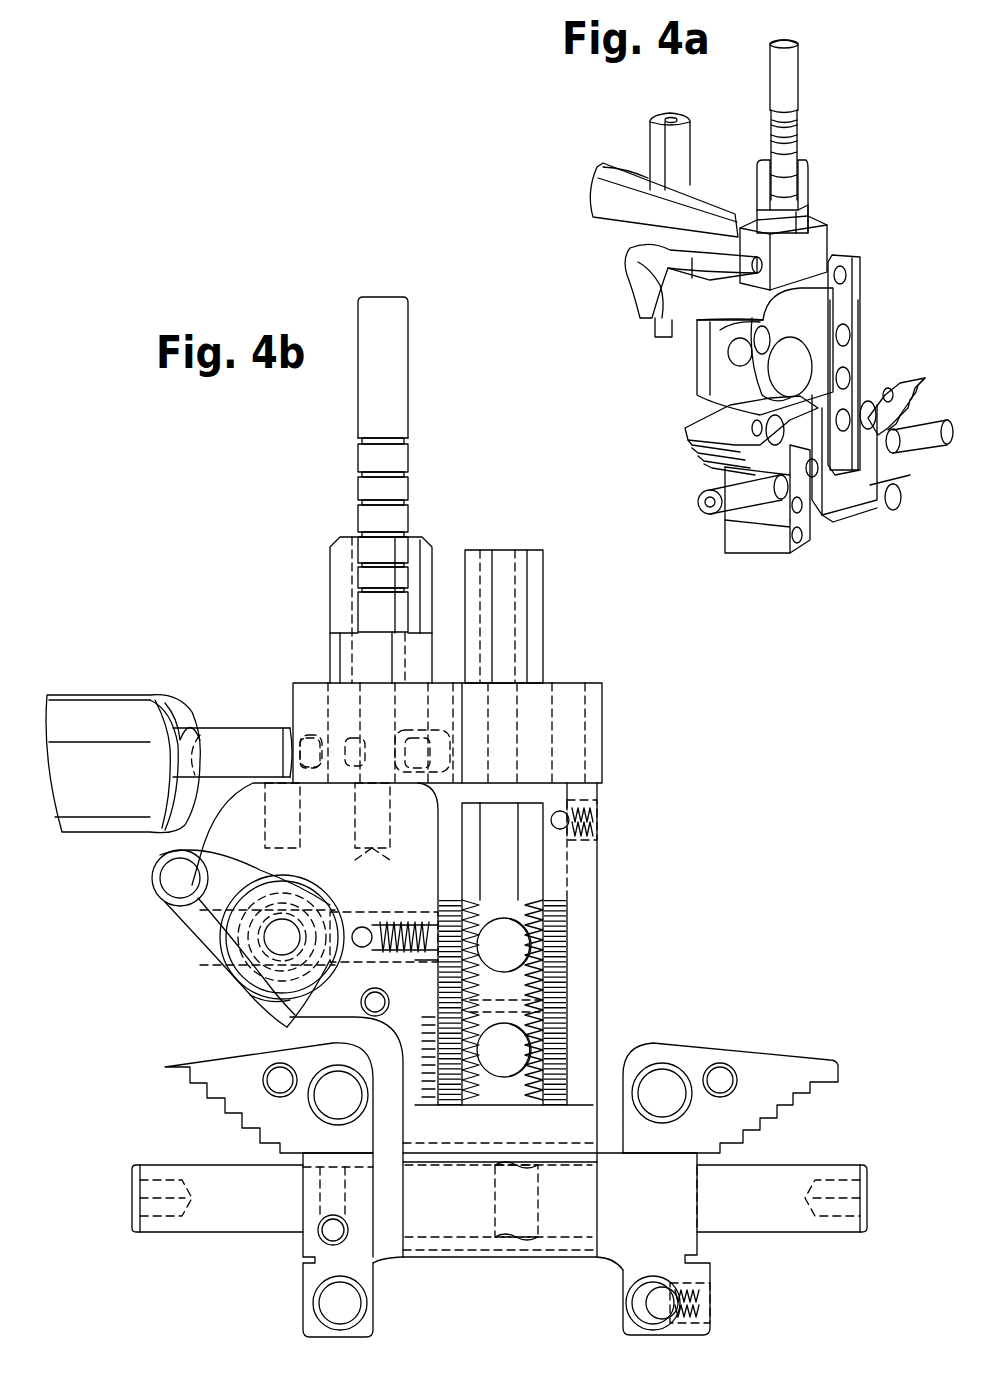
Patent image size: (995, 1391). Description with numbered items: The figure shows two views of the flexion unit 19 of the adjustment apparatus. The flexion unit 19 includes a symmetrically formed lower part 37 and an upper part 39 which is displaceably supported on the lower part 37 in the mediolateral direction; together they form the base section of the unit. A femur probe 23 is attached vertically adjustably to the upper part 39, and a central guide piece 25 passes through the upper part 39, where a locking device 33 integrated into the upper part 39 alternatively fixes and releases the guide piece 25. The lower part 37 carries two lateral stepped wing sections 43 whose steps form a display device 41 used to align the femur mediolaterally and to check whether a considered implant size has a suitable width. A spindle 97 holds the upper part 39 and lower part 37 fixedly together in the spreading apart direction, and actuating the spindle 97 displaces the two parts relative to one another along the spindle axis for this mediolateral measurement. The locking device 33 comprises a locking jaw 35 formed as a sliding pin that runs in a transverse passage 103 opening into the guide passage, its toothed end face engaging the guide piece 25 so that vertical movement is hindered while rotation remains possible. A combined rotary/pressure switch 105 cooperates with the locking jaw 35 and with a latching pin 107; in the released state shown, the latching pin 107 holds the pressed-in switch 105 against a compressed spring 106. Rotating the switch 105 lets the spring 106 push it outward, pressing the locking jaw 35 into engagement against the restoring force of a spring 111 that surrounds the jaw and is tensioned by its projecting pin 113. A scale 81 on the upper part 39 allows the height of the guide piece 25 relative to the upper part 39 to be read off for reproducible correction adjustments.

In FIG. 4B, the flexion unit 19 is at (240, 494).
In FIG. 4A, the flexion unit 19 is at (583, 160).
In FIG. 4B, the femur probe 23 is at (426, 523).
In FIG. 4A, the femur probe 23 is at (731, 150).
In FIG. 4B, the central guide piece 25 is at (538, 1008).
In FIG. 4A, the central guide piece 25 is at (843, 370).
In FIG. 4B, the locking device 33 is at (177, 935).
In FIG. 4A, the locking device 33 is at (676, 363).
In FIG. 4B, the locking jaw 35 is at (426, 961).
In FIG. 4B, the lower part 37 is at (638, 1263).
In FIG. 4A, the lower part 37 is at (736, 535).
In FIG. 4B, the upper part 39 is at (593, 916).
In FIG. 4A, the upper part 39 is at (838, 483).
In FIG. 4B, the display device 41 is at (186, 1094).
In FIG. 4B, the stepped wing sections 43 is at (203, 1054).
In FIG. 4A, the stepped wing sections 43 is at (708, 419).
In FIG. 4B, the display device (scale) 81 is at (422, 1115).
In FIG. 4B, the spindle 97 is at (762, 1211).
In FIG. 4A, the spindle 97 is at (760, 495).
In FIG. 4B, the transverse passage 103 is at (360, 903).
In FIG. 4B, the rotary/pressure switch 105 is at (163, 913).
In FIG. 4B, the spring 106 is at (223, 983).
In FIG. 4B, the latching pin 107 is at (266, 733).
In FIG. 4B, the spring 111 is at (384, 906).
In FIG. 4B, the pin 113 is at (298, 1020).